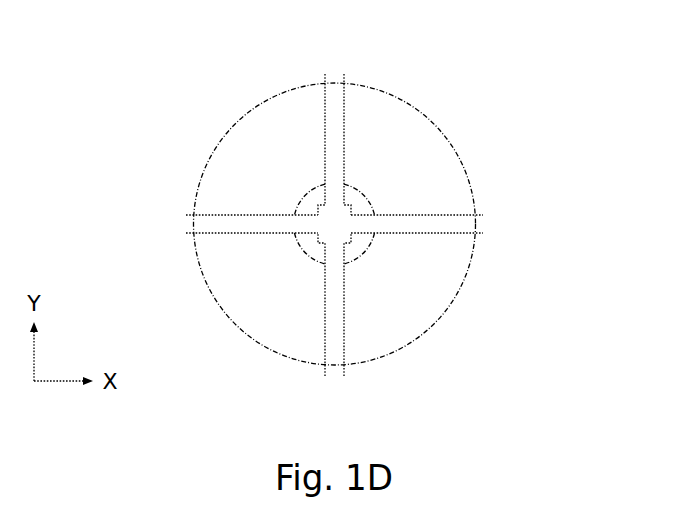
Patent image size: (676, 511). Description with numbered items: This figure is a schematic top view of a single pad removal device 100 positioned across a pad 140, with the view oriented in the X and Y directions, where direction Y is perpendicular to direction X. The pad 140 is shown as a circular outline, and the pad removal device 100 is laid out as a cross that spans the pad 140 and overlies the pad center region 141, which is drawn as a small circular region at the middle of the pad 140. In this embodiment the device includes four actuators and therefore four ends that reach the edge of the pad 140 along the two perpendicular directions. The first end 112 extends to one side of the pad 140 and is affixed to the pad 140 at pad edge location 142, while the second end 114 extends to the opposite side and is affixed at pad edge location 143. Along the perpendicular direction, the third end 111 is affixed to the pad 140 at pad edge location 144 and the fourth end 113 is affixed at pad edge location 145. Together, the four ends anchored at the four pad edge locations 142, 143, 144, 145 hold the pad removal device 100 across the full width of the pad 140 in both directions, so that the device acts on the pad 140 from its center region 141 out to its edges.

The pad removal device 100 is at (334, 226).
The third end 111 is at (325, 74).
The first end 112 is at (186, 215).
The fourth end 113 is at (325, 376).
The second end 114 is at (483, 215).
The pad 140 is at (411, 102).
The pad center region 141 is at (352, 199).
The pad edge location 142 is at (186, 233).
The pad edge location 143 is at (483, 233).
The pad edge location 144 is at (344, 74).
The pad edge location 145 is at (344, 376).